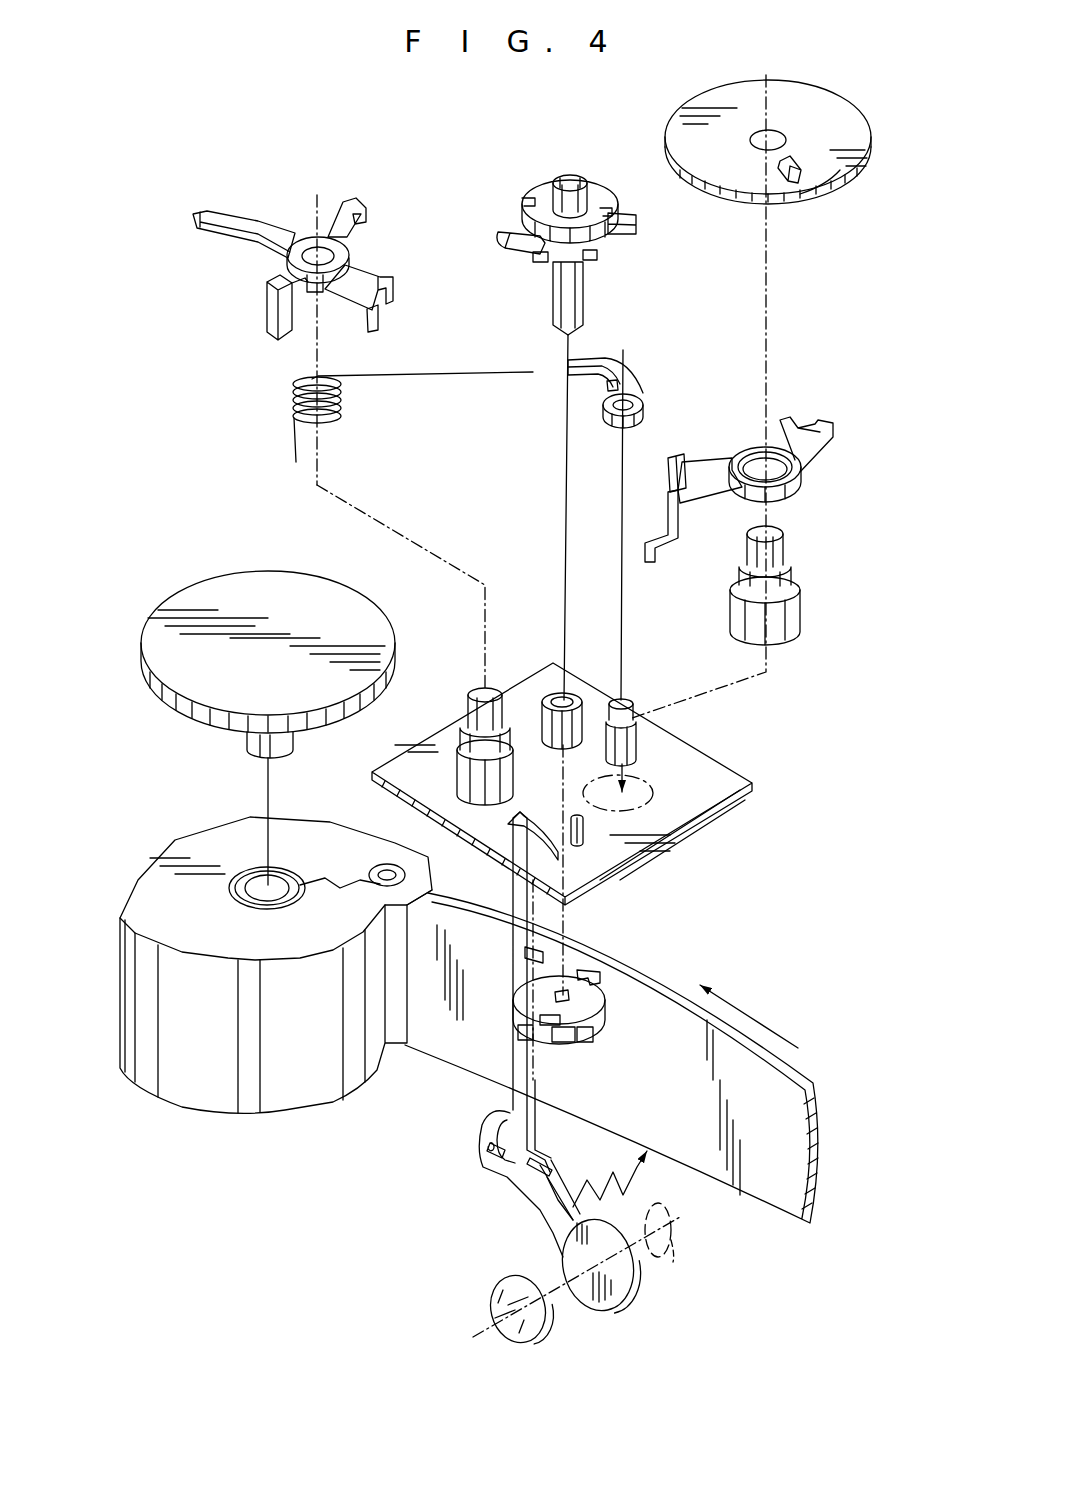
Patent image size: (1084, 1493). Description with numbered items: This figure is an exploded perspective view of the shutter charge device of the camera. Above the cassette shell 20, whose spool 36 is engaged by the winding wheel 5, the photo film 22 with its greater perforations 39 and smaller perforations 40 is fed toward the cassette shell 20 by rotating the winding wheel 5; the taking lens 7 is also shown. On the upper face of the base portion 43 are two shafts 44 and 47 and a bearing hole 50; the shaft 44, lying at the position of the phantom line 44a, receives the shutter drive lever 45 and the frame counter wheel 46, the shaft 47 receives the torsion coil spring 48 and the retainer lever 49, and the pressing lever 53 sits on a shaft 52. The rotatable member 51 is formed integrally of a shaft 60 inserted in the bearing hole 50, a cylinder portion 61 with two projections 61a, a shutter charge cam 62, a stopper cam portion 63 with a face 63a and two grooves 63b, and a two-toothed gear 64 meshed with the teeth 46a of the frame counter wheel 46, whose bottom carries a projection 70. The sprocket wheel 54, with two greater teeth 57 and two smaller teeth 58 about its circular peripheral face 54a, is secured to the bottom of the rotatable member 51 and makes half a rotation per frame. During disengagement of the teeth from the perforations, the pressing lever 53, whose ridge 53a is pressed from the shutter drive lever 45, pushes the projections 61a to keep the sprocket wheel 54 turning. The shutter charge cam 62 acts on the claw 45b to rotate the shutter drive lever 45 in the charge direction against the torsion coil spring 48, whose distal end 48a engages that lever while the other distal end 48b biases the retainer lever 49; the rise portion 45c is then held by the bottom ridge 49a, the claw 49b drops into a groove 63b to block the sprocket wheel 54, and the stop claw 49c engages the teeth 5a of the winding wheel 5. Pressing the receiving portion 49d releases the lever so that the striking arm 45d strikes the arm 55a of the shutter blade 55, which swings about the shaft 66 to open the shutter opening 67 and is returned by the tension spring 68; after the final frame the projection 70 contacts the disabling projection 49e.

The winding wheel 5 is at (268, 686).
The teeth 5a is at (218, 731).
The taking lens 7 is at (547, 1337).
The cassette shell 20 is at (276, 1004).
The photo film 22 is at (758, 1212).
The spool 36 is at (285, 898).
The greater perforations 39 is at (584, 1000).
The smaller perforations 40 is at (544, 957).
The base portion 43 is at (702, 756).
The shaft 44 is at (797, 628).
The phantom line 44a is at (655, 791).
The shutter drive lever 45 is at (753, 486).
The claw 45b is at (800, 420).
The rise portion 45c is at (684, 460).
The striking arm 45d is at (668, 550).
The frame counter wheel 46 is at (812, 98).
The teeth 46a is at (836, 196).
The shaft 47 is at (465, 772).
The torsion coil spring 48 is at (359, 418).
The distal end 48a is at (413, 376).
The distal end 48b is at (293, 447).
The retainer lever 49 is at (303, 308).
The bottom ridge 49a is at (380, 325).
The claw 49b is at (358, 200).
The stop claw 49c is at (194, 214).
The receiving portion 49d is at (270, 318).
The disabling projection 49e is at (390, 278).
The bearing hole 50 is at (566, 700).
The rotatable member 51 is at (566, 403).
The shaft 52 is at (630, 720).
The pressing lever 53 is at (630, 513).
The ridge 53a is at (606, 391).
The sprocket wheel 54 is at (567, 1007).
The circular peripheral face 54a is at (563, 1033).
The shutter blade 55 is at (545, 1235).
The arm 55a is at (509, 834).
The greater teeth 57 is at (597, 972).
The smaller teeth 58 is at (595, 1037).
The shaft 60 is at (557, 318).
The cylinder portion 61 is at (578, 263).
The projections 61a is at (540, 263).
The shutter charge cam 62 is at (630, 244).
The stopper cam portion 63 is at (601, 178).
The face 63a is at (510, 232).
The grooves 63b is at (527, 200).
The two-toothed gear 64 is at (569, 177).
The shaft 66 is at (488, 1147).
The shutter opening 67 is at (664, 1251).
The tension spring 68 is at (607, 1188).
The projection 70 is at (801, 172).